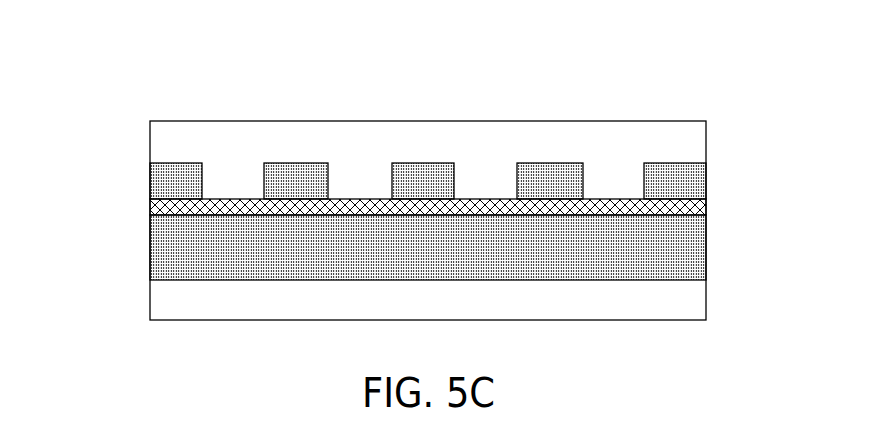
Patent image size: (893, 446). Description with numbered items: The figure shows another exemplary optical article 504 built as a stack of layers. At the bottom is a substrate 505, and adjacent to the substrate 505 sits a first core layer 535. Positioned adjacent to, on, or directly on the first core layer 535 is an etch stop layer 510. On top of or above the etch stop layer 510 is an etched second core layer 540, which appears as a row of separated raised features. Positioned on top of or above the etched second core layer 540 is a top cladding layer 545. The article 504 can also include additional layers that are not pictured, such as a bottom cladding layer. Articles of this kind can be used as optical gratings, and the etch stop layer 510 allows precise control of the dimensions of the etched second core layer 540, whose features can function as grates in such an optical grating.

The article 504 is at (706, 96).
The substrate 505 is at (445, 312).
The first core layer 535 is at (445, 260).
The etch stop layer 510 is at (158, 207).
The top cladding layer 545 is at (483, 151).
The etched second core layer 540 is at (693, 185).